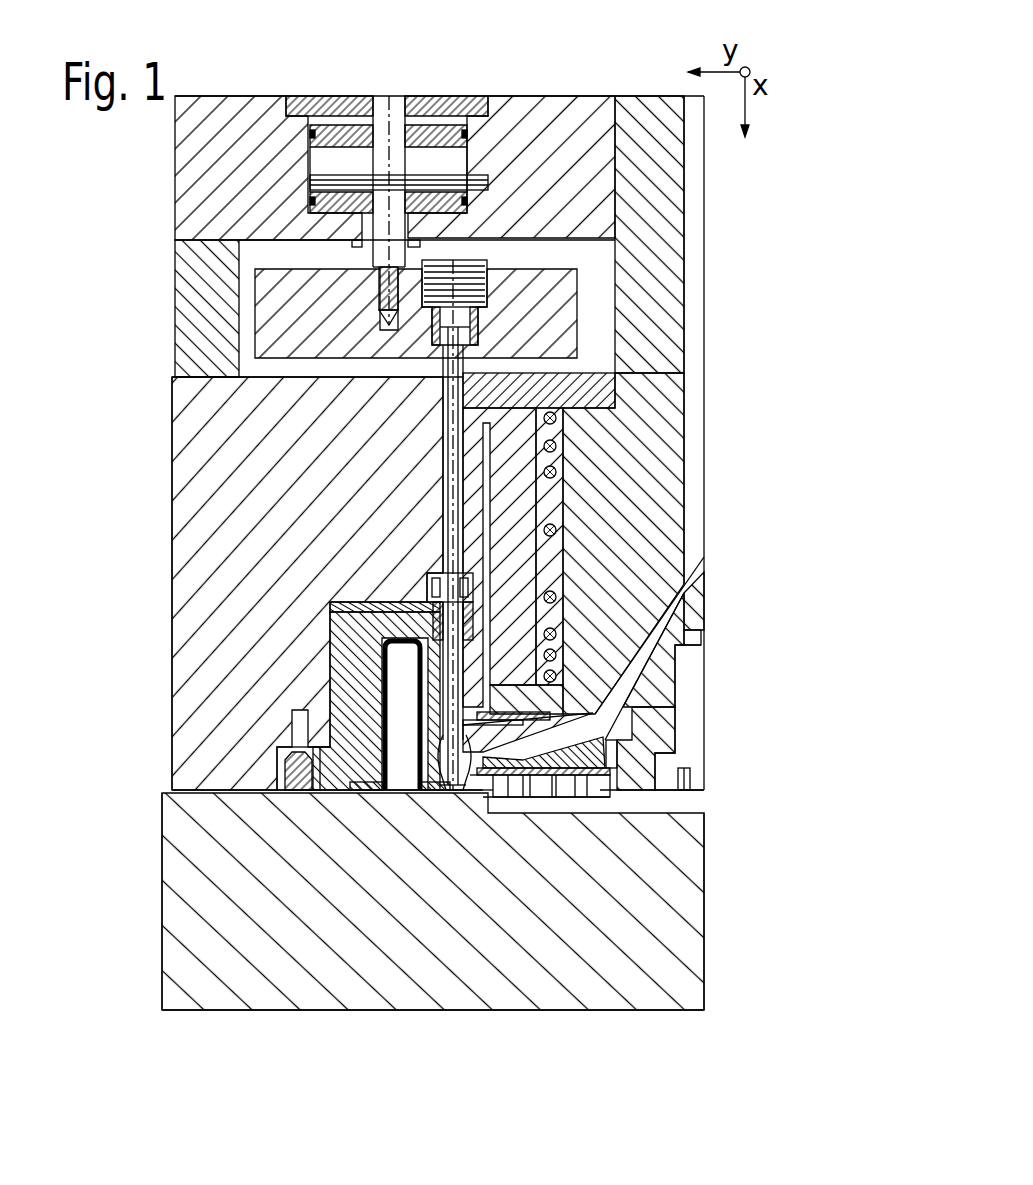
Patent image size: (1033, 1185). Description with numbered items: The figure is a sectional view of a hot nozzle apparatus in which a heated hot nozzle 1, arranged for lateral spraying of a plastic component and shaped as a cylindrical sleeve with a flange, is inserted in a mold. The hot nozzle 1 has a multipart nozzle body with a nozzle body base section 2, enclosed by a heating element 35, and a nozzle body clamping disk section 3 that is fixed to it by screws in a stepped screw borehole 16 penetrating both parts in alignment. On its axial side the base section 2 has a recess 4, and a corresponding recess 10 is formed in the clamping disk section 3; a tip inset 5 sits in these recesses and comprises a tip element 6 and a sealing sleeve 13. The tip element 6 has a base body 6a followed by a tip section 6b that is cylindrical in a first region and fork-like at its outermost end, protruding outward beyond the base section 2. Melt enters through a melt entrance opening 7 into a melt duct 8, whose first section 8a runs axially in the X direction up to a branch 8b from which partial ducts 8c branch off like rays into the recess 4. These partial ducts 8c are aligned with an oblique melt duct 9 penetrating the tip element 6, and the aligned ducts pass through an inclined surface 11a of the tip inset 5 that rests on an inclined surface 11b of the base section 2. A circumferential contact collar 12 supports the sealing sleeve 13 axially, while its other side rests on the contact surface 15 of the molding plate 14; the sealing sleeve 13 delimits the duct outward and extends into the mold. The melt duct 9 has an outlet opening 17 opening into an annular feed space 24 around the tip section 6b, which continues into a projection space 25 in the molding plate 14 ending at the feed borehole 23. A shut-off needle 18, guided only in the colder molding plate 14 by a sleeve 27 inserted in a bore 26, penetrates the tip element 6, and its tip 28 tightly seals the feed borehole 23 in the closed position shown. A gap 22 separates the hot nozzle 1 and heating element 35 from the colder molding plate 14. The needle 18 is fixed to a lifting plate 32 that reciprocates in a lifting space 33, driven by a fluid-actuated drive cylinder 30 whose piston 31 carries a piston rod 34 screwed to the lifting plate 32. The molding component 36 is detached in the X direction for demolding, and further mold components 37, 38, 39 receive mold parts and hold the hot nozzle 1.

The hot nozzle 1 is at (688, 445).
The nozzle body base section 2 is at (645, 500).
The nozzle body clamping disk section 3 is at (648, 722).
The recess 4 is at (557, 702).
The tip inset 5 is at (635, 533).
The tip element 6 is at (461, 790).
The base body 6a is at (582, 780).
The tip section 6b is at (370, 793).
The melt entrance opening 7 is at (690, 372).
The melt duct 8 is at (695, 383).
The first section 8a is at (693, 470).
The branch 8b is at (700, 590).
The partial duct 8c is at (690, 640).
The melt duct 9 is at (688, 780).
The recess 10 is at (587, 780).
The inclined surface 11a is at (633, 672).
The inclined surface 11b is at (610, 755).
The contact collar 12 is at (568, 780).
The sealing sleeve 13 is at (487, 790).
The molding plate 14 is at (333, 783).
The contact surface 15 is at (465, 790).
The stepped screw borehole 16 is at (690, 745).
The outlet opening 17 is at (522, 780).
The shut-off needle 18 is at (330, 602).
The gap 22 is at (495, 420).
The feed borehole 23 is at (443, 790).
The feed space 24 is at (513, 520).
The projection space 25 is at (390, 793).
The bore 26 is at (437, 603).
The sleeve 27 is at (420, 592).
The tip 28 is at (447, 790).
The drive cylinder 30 is at (333, 177).
The piston 31 is at (422, 177).
The lifting plate 32 is at (550, 290).
The lifting space 33 is at (590, 262).
The piston rod 34 is at (387, 253).
The heating element 35 is at (568, 455).
The molding component 36 is at (190, 878).
The mold component 37 is at (205, 700).
The mold component 38 is at (195, 322).
The mold component 39 is at (218, 175).